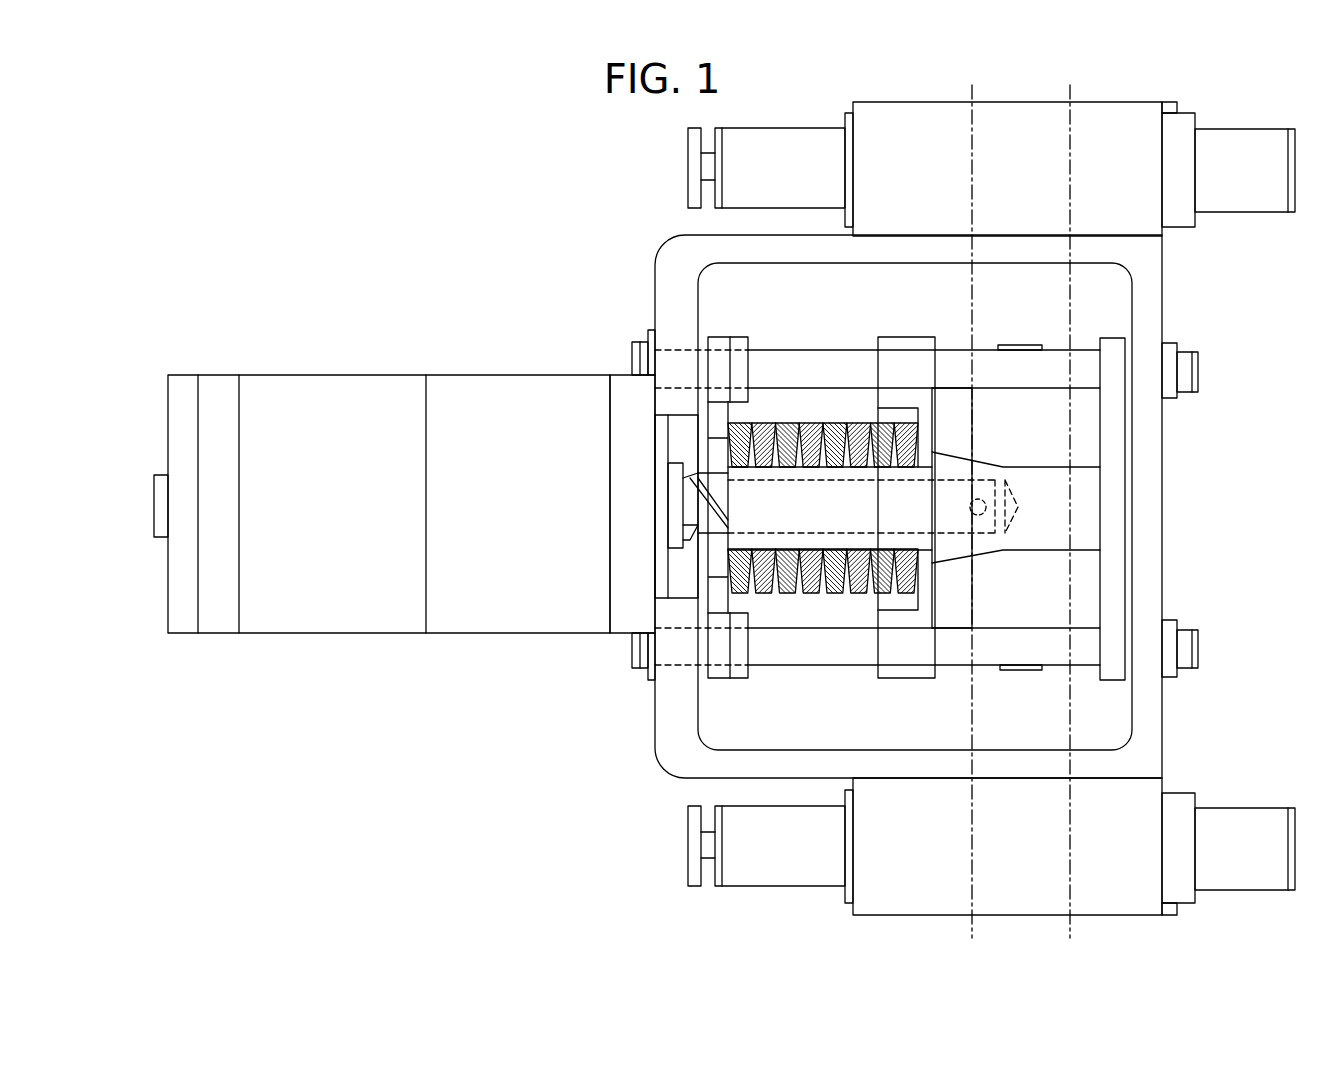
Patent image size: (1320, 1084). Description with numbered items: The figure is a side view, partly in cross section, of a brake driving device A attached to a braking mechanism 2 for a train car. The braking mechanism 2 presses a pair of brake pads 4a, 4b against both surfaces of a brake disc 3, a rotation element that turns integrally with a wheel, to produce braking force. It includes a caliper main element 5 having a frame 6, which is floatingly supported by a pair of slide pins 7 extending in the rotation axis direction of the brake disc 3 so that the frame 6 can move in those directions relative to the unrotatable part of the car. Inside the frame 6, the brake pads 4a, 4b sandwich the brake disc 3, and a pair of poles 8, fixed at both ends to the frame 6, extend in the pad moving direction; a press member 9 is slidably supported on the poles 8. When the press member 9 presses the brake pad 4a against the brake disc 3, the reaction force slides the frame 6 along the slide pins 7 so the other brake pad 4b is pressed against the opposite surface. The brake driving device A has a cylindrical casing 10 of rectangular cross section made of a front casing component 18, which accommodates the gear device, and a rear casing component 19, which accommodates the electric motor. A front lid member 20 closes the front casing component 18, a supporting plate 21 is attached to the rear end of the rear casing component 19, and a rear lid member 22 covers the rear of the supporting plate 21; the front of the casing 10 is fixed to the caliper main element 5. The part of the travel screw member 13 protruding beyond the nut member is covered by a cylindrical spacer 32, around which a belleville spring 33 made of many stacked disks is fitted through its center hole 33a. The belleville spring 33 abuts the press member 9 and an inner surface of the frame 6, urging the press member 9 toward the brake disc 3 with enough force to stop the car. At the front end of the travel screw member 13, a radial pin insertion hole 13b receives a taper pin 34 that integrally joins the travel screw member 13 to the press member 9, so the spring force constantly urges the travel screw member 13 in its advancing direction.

The brake driving device A is at (306, 313).
The braking mechanism 2 is at (605, 221).
The brake disc 3 is at (1070, 705).
The brake pad 4a is at (945, 617).
The brake pad 4b is at (1085, 586).
The caliper main element 5 is at (899, 118).
The frame 6 is at (664, 757).
The slide pins 7 is at (780, 140).
The poles 8 is at (823, 362).
The press member 9 is at (899, 342).
The cylindrical casing 10 is at (456, 373).
The travel screw member 13 is at (156, 520).
The pin insertion hole 13b is at (984, 540).
The front casing component 18 is at (550, 395).
The rear casing component 19 is at (371, 378).
The front lid member 20 is at (621, 628).
The supporting plate 21 is at (217, 378).
The rear lid member 22 is at (176, 395).
The spacer 32 is at (793, 523).
The belleville spring 33 is at (780, 470).
The center hole 33a is at (790, 470).
The taper pin 34 is at (976, 480).